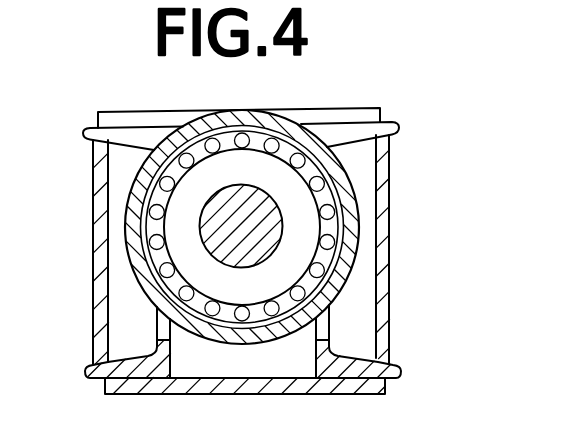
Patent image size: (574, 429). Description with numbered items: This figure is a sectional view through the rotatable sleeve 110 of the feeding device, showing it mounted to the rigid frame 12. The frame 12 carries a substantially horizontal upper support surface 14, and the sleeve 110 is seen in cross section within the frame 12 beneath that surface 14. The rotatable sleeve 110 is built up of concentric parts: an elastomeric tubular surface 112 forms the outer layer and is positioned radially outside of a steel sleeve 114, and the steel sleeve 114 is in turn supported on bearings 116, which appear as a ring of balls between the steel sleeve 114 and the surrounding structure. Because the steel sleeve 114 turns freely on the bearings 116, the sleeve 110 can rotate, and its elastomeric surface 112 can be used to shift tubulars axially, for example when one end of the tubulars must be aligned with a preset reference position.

The rigid frame 12 is at (90, 252).
The upper support surface 14 is at (125, 112).
The rotatable sleeve 110 is at (287, 201).
The elastomeric tubular surface 112 is at (355, 215).
The steel sleeve 114 is at (345, 255).
The bearings 116 is at (305, 287).